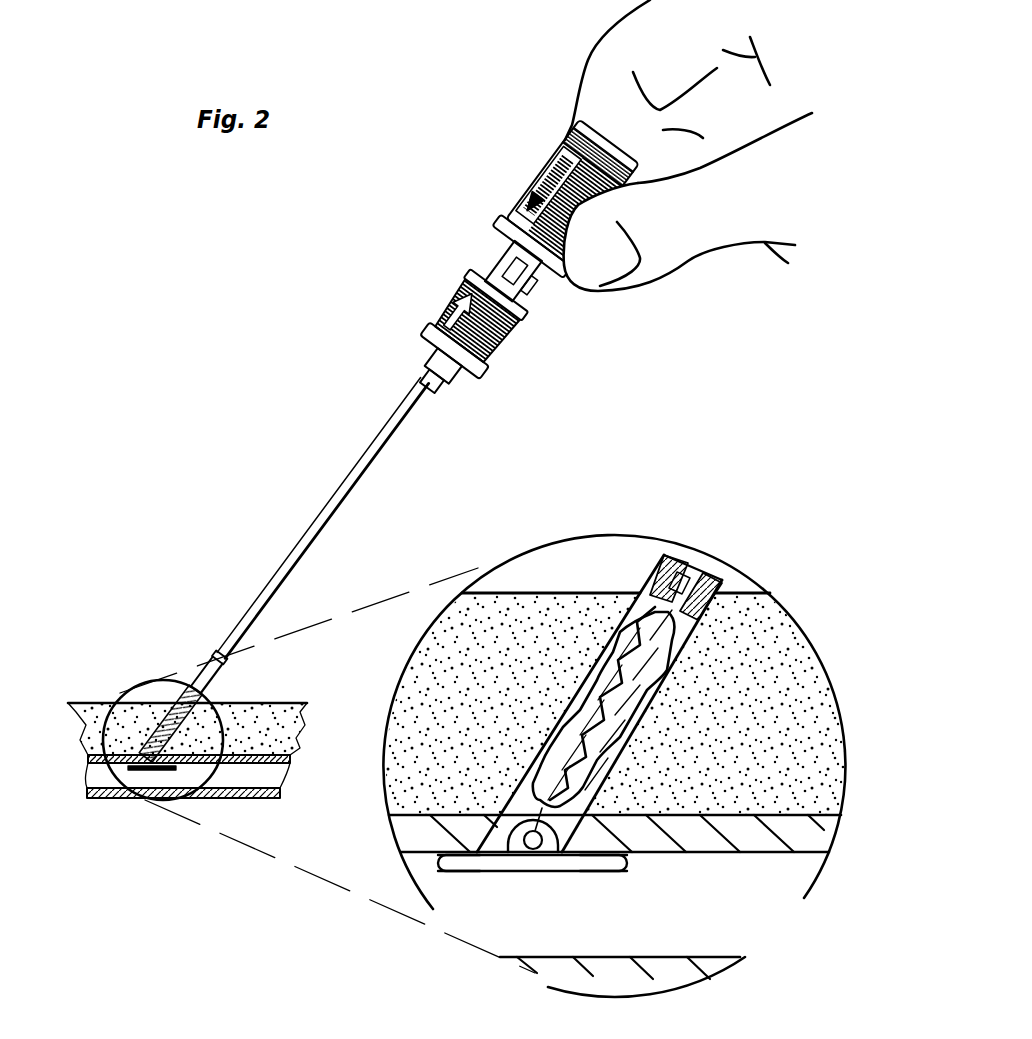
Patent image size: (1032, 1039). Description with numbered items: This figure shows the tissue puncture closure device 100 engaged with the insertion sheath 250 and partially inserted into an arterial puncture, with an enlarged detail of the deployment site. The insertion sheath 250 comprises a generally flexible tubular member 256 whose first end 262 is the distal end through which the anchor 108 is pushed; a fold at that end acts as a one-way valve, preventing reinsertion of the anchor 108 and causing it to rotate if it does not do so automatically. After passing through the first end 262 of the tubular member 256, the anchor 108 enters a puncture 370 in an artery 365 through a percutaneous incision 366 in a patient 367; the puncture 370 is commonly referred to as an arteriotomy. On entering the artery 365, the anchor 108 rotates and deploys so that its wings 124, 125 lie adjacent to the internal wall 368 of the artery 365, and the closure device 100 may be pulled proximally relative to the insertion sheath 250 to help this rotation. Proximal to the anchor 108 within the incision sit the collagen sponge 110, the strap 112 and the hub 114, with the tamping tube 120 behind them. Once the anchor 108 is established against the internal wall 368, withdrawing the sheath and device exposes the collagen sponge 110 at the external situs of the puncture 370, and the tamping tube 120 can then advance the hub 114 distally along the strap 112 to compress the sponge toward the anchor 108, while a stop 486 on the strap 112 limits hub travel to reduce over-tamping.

The tissue puncture closure device 100 is at (503, 230).
The insertion sheath 250 is at (417, 405).
The tubular member 256 is at (383, 432).
The first end 262 is at (240, 620).
The tamping tube 120 is at (205, 662).
The patient 367 is at (293, 722).
The internal wall 368 is at (287, 772).
The artery 365 is at (245, 780).
The hub 114 is at (663, 568).
The strap 112 is at (697, 626).
The collagen sponge 110 is at (668, 682).
The percutaneous incision 366 is at (600, 647).
The stop 486 is at (567, 717).
The puncture 370 is at (500, 837).
The anchor 108 is at (533, 862).
The wing 124 is at (587, 862).
The wing 125 is at (465, 862).